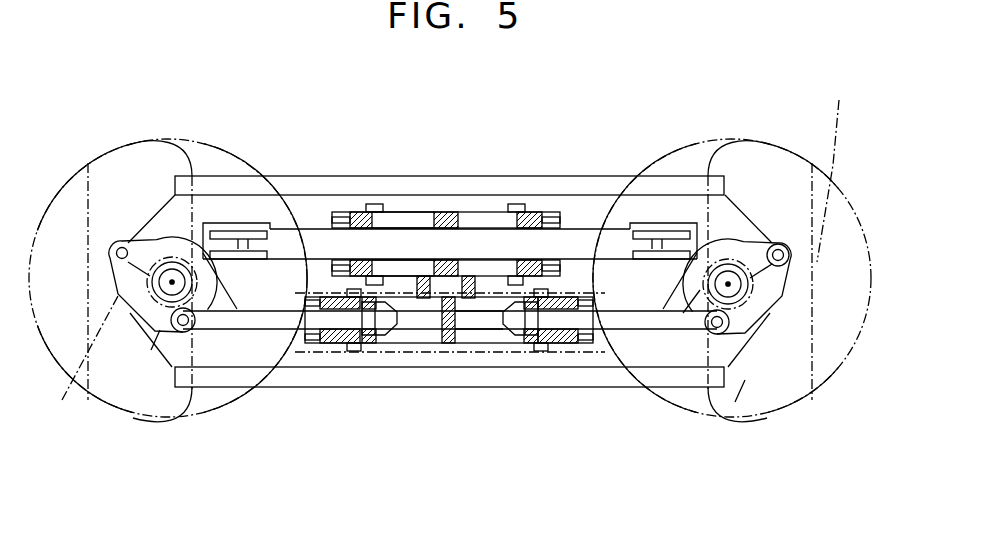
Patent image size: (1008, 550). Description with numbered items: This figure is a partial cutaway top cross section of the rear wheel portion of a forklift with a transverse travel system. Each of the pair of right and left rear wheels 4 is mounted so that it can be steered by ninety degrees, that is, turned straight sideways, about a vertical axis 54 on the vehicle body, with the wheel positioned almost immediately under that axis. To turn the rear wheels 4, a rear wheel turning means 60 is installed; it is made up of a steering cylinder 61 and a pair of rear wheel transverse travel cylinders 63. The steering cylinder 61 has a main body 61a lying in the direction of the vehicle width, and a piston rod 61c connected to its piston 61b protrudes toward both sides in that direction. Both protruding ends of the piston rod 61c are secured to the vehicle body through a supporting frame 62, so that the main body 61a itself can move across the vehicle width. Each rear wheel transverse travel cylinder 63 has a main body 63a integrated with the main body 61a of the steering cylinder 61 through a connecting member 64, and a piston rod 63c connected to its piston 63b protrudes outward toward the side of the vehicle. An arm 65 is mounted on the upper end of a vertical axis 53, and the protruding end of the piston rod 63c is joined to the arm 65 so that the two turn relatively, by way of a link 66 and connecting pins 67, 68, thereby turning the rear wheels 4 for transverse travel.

The rear wheel 4 is at (151, 350).
The vertical axis 53 is at (445, 249).
The vertical axis 54 is at (170, 293).
The rear wheel turning means 60 is at (662, 196).
The steering cylinder 61 is at (468, 184).
The main body 61a is at (477, 212).
The piston 61b is at (447, 212).
The piston rod 61c is at (588, 225).
The supporting frame 62 is at (283, 276).
The rear wheel transverse travel cylinder 63 is at (450, 384).
The main body 63a is at (505, 345).
The piston 63b is at (367, 352).
The piston rod 63c is at (305, 343).
The connecting member 64 is at (497, 332).
The arm 65 is at (153, 242).
The link 66 is at (436, 307).
The connecting pin 67 is at (781, 246).
The connecting pin 68 is at (683, 313).